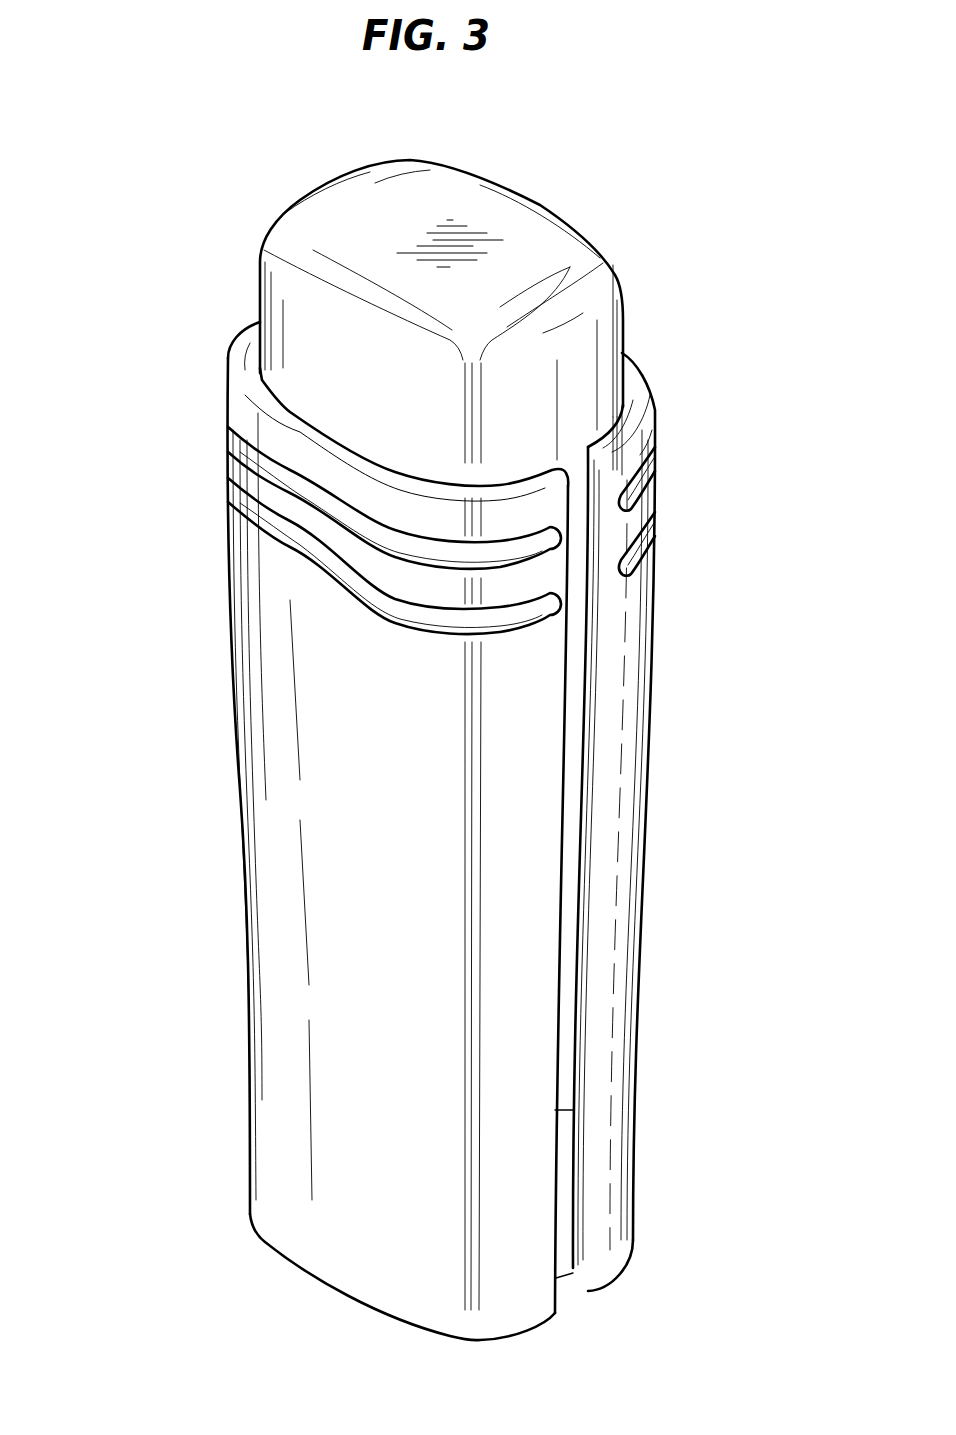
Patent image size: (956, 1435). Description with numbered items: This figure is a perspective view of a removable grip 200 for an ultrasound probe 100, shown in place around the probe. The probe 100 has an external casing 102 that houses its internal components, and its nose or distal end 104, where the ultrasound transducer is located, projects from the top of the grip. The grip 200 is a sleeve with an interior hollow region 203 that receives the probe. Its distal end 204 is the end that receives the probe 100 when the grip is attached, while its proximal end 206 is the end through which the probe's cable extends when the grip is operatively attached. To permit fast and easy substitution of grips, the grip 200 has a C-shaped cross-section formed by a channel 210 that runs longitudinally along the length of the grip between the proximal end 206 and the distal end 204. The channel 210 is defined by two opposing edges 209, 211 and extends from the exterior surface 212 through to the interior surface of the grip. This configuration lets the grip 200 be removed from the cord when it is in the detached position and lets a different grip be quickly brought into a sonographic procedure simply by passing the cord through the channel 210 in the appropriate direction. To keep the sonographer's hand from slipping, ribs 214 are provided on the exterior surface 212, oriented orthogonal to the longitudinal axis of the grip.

The probe 100 is at (293, 287).
The external casing 102 is at (573, 800).
The distal end 104 is at (275, 168).
The grip 200 is at (150, 809).
The interior hollow region 203 is at (566, 1262).
The distal end 204 is at (225, 318).
The proximal end 206 is at (224, 1157).
The opposing edge 209 is at (657, 422).
The channel 210 is at (590, 606).
The opposing edge 211 is at (562, 873).
The exterior surface 212 is at (348, 820).
The ribs 214 is at (227, 490).